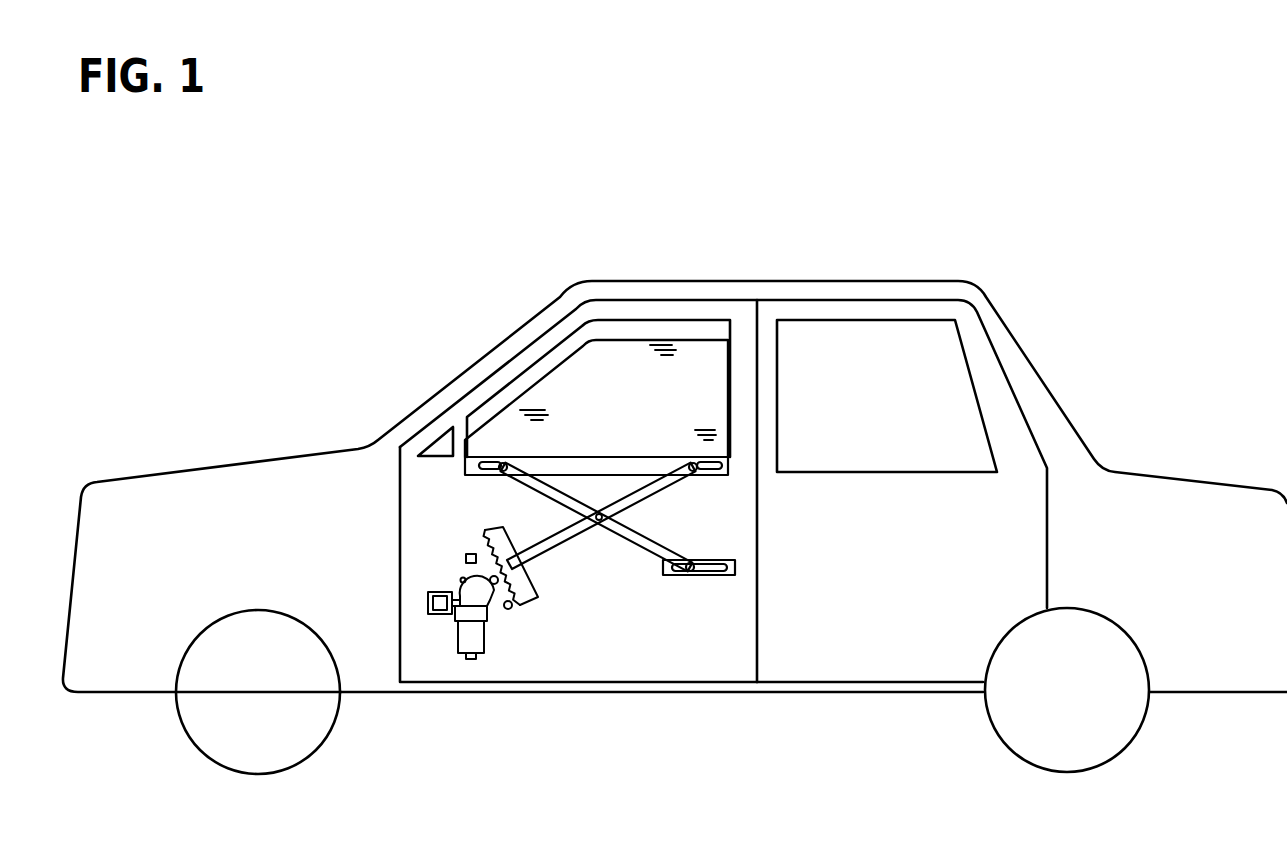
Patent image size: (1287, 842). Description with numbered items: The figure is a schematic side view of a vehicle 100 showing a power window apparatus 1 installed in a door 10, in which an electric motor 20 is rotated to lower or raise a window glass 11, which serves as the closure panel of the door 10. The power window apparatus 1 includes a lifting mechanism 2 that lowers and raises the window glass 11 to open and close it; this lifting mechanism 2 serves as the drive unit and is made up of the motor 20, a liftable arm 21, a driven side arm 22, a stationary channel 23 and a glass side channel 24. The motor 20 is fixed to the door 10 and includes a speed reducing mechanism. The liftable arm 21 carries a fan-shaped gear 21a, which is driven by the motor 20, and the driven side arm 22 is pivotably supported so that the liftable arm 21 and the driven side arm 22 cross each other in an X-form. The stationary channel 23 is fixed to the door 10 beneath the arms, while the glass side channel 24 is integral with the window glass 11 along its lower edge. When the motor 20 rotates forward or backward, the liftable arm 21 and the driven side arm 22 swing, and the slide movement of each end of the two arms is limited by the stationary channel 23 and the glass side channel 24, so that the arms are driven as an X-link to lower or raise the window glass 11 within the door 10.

The vehicle 100 is at (823, 180).
The door 10 is at (733, 660).
The power window apparatus 1 is at (528, 377).
The window glass 11 is at (693, 353).
The lifting mechanism 2 is at (620, 568).
The glass side channel 24 is at (734, 462).
The driven side arm 22 is at (525, 497).
The liftable arm 21 is at (655, 490).
The fan-shaped gear 21a is at (527, 600).
The motor 20 is at (450, 650).
The stationary channel 23 is at (716, 577).